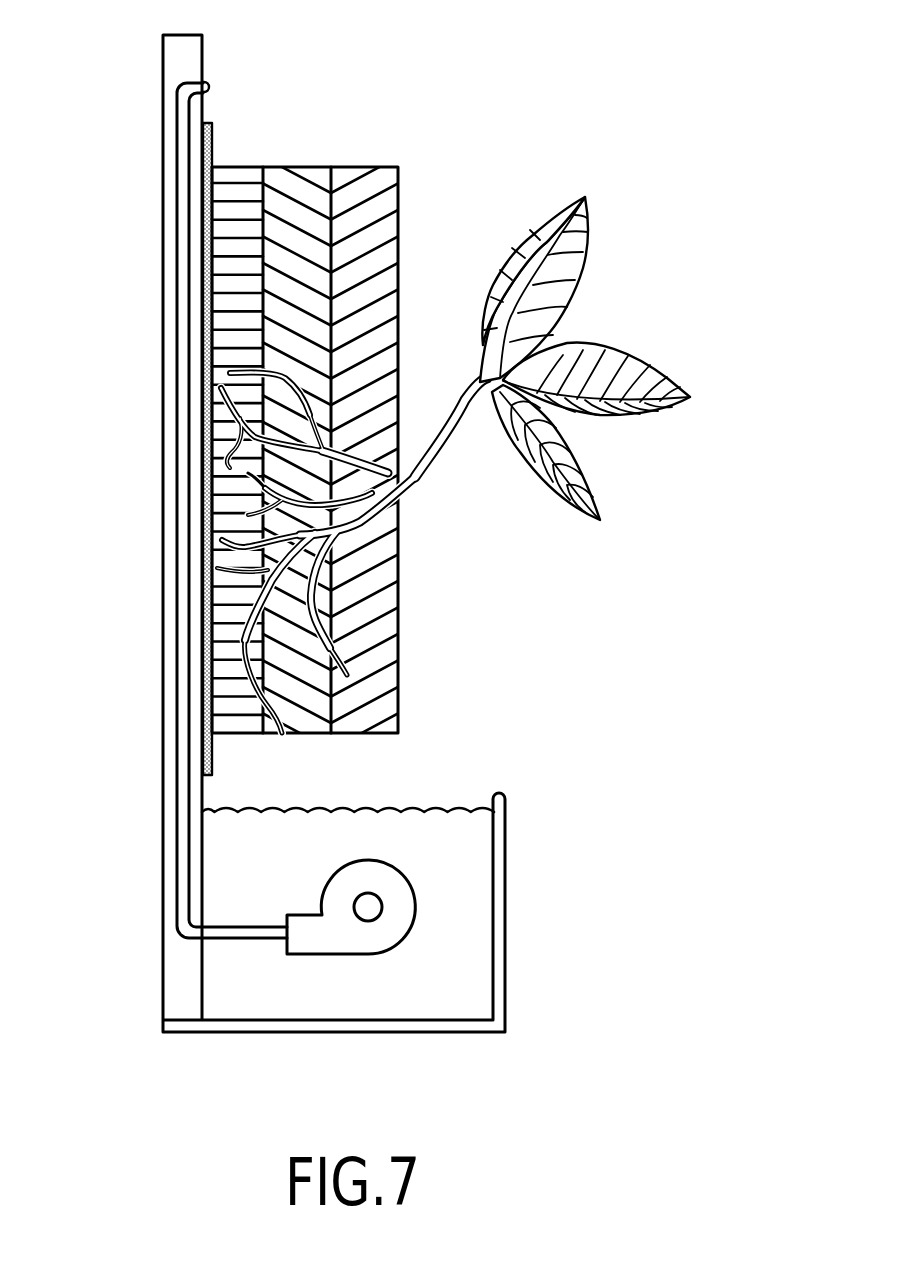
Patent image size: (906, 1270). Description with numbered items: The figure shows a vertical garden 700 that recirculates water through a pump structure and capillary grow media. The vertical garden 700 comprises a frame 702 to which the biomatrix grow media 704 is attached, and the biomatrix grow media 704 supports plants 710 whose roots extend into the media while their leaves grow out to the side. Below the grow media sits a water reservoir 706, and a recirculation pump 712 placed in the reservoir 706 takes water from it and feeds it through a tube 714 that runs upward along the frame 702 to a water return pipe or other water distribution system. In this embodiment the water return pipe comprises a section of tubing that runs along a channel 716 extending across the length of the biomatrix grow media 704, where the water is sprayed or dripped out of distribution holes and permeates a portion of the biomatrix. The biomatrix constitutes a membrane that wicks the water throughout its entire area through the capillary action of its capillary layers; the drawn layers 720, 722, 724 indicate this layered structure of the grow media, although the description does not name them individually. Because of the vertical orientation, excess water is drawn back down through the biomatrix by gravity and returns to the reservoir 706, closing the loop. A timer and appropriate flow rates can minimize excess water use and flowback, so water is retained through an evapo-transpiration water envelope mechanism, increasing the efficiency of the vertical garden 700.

The vertical garden 700 is at (662, 65).
The frame 702 is at (163, 56).
The biomatrix grow media 704 is at (372, 175).
The reservoir 706 is at (507, 949).
The plants 710 is at (588, 236).
The recirculation pump 712 is at (410, 933).
The tube 714 is at (177, 117).
The channel 716 is at (208, 87).
The wicking strip 720 is at (203, 340).
The first medium layer 722 is at (233, 265).
The second medium layer 724 is at (300, 213).